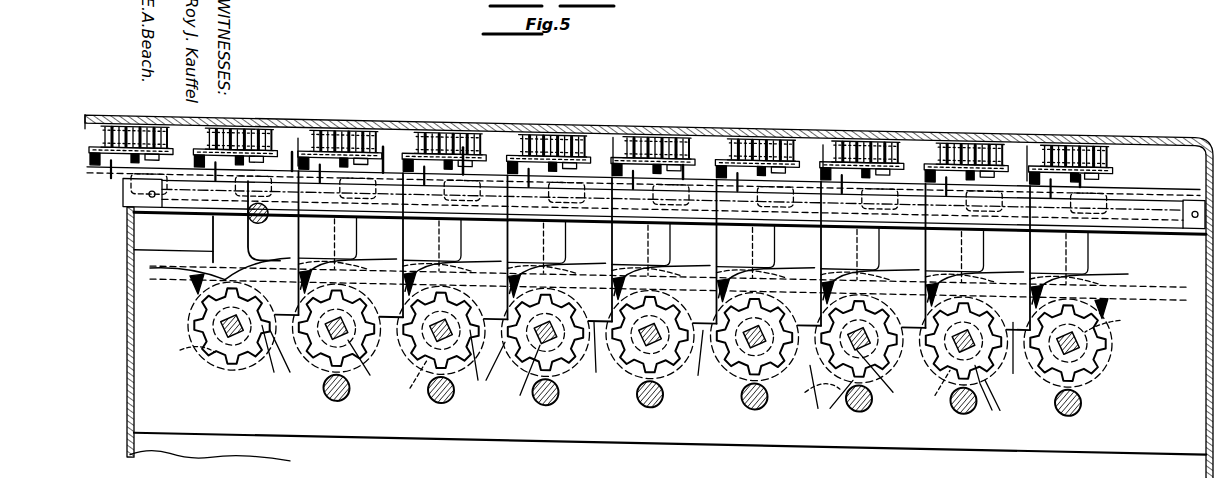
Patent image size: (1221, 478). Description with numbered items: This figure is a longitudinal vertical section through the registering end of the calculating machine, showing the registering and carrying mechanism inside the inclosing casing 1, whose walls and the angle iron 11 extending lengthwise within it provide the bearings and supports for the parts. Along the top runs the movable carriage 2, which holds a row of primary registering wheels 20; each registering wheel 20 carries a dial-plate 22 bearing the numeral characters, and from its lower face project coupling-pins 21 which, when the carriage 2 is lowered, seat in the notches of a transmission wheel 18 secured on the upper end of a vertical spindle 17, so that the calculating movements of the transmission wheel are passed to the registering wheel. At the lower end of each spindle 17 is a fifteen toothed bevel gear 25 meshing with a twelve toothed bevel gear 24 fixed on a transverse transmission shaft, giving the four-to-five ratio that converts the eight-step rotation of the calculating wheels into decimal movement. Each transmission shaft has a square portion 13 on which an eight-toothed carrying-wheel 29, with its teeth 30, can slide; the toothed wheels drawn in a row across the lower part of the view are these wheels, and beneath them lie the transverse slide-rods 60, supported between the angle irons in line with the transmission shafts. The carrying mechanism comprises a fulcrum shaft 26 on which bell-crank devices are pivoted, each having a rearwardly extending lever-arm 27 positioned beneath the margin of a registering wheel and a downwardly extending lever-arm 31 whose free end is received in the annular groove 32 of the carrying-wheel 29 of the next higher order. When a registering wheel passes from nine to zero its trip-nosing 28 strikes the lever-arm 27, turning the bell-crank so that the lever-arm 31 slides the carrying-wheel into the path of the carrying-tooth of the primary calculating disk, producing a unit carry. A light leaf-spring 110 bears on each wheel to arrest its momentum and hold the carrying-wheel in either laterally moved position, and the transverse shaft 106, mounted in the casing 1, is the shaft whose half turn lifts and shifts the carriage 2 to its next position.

The inclosing casing 1 is at (128, 372).
The movable carriage 2 is at (927, 118).
The angle iron 11 is at (670, 422).
The square portion of transmission shaft 13 is at (230, 323).
The vertical spindle 17 is at (340, 231).
The transmission wheel 18 is at (200, 206).
The primary registering wheel 20 is at (1127, 140).
The coupling-pin 21 is at (292, 146).
The dial-plate 22 is at (178, 119).
The twelve toothed bevel gear 24 is at (672, 351).
The fifteen toothed bevel gear 25 is at (190, 276).
The fulcrum shaft 26 is at (1160, 192).
The rearwardly extending lever-arm 27 is at (298, 154).
The trip-nosing 28 is at (200, 121).
The carrying-wheel 29 is at (630, 381).
The teeth of carrying-wheel 30 is at (635, 378).
The downwardly extending lever-arm 31 is at (925, 230).
The annular groove 32 is at (671, 389).
The transverse slide-rod 60 is at (340, 391).
The transverse shaft 106 is at (265, 219).
The leaf-spring 110 is at (208, 258).